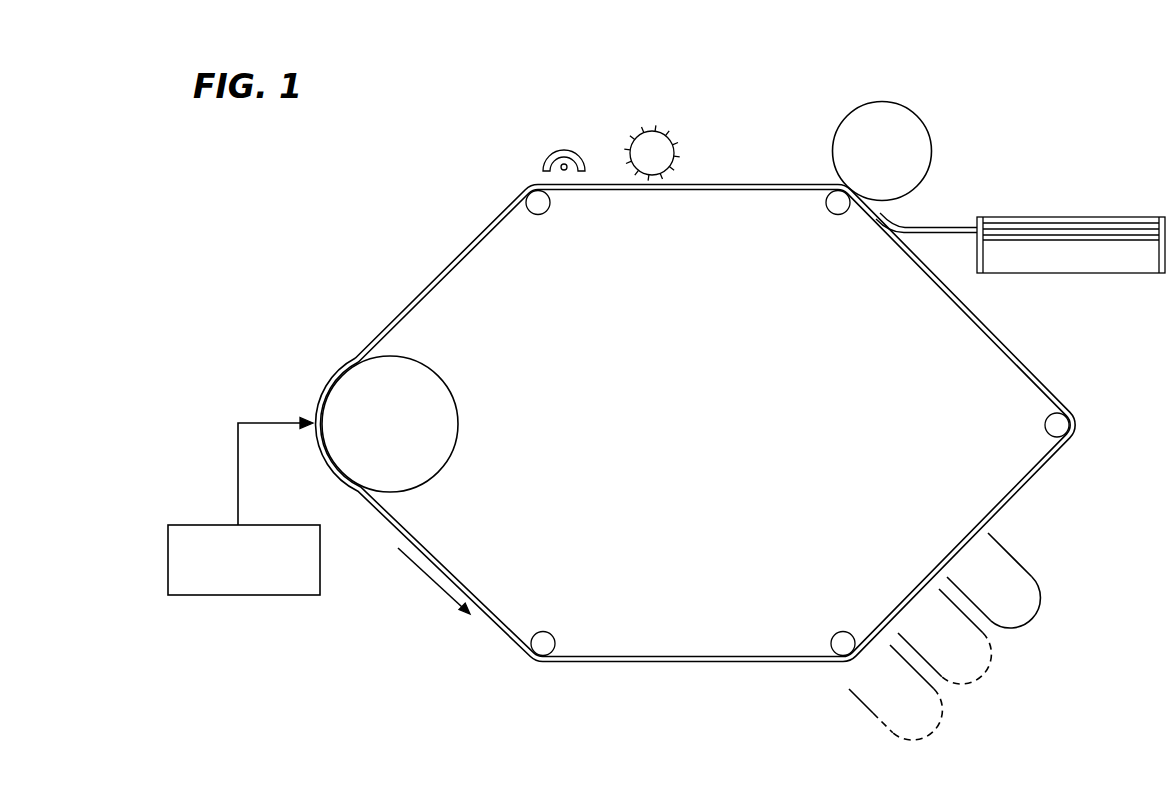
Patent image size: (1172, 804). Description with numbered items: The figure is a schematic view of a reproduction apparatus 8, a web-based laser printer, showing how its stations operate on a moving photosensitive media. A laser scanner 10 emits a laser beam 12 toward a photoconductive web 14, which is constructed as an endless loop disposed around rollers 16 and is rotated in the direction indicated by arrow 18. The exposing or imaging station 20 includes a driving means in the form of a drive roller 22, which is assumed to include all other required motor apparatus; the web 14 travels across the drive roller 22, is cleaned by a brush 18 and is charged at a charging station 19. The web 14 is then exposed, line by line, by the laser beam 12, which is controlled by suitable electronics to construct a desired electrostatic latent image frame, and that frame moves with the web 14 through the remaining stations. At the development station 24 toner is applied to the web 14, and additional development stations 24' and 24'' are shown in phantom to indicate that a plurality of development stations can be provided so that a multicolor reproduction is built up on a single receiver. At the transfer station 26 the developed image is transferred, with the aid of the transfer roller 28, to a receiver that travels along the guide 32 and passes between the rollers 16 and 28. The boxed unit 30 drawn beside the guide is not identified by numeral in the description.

The reproduction apparatus 8 is at (589, 86).
The laser scanner 10 is at (184, 525).
The laser beam 12 is at (241, 494).
The photoconductive web 14 is at (943, 298).
The rollers 16 is at (546, 212).
The arrow 18 is at (692, 134).
The charging station 19 is at (558, 138).
The exposing or imaging station 20 is at (344, 332).
The drive roller 22 is at (457, 423).
The development station 24 is at (1006, 580).
The additional development station 24' is at (966, 636).
The additional development station 24'' is at (914, 692).
The transfer station 26 is at (806, 157).
The transfer roller 28 is at (931, 138).
The fuser 30 is at (1128, 263).
The guide 32 is at (932, 226).